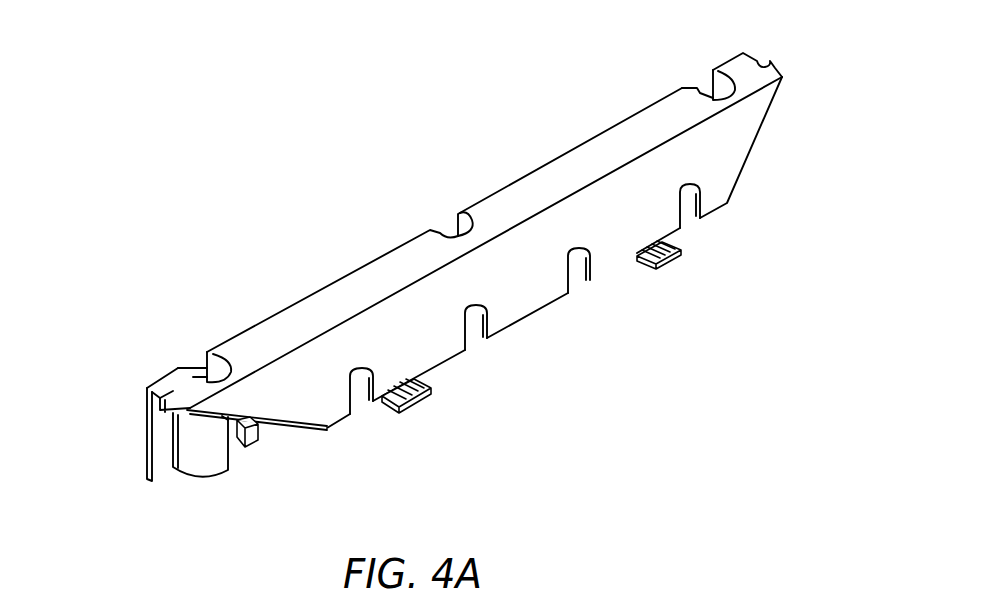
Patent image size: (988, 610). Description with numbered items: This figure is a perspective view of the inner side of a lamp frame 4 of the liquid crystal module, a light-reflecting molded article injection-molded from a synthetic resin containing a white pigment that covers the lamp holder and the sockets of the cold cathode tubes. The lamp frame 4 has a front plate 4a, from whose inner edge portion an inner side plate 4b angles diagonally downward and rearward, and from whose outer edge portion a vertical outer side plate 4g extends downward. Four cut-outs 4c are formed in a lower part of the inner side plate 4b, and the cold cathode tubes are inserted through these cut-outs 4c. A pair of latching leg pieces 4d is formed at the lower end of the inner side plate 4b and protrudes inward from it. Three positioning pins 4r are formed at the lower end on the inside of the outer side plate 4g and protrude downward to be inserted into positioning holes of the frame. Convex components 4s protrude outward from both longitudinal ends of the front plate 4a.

The lamp frame 4 is at (436, 254).
The front plate 4a is at (330, 300).
The inner side plate 4b is at (527, 300).
The cut-outs 4c is at (360, 398).
The latching leg pieces 4d is at (423, 403).
The outer side plate 4g is at (147, 448).
The positioning pins 4r is at (247, 440).
The convex components 4s is at (150, 400).